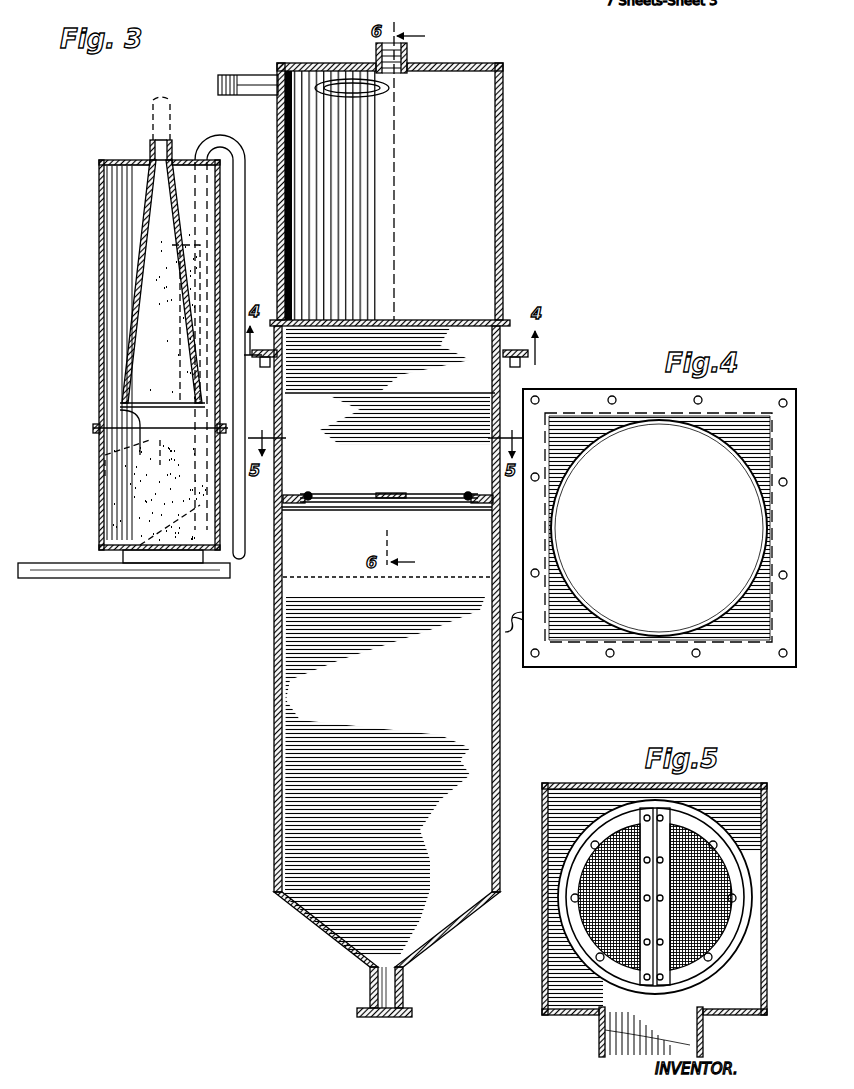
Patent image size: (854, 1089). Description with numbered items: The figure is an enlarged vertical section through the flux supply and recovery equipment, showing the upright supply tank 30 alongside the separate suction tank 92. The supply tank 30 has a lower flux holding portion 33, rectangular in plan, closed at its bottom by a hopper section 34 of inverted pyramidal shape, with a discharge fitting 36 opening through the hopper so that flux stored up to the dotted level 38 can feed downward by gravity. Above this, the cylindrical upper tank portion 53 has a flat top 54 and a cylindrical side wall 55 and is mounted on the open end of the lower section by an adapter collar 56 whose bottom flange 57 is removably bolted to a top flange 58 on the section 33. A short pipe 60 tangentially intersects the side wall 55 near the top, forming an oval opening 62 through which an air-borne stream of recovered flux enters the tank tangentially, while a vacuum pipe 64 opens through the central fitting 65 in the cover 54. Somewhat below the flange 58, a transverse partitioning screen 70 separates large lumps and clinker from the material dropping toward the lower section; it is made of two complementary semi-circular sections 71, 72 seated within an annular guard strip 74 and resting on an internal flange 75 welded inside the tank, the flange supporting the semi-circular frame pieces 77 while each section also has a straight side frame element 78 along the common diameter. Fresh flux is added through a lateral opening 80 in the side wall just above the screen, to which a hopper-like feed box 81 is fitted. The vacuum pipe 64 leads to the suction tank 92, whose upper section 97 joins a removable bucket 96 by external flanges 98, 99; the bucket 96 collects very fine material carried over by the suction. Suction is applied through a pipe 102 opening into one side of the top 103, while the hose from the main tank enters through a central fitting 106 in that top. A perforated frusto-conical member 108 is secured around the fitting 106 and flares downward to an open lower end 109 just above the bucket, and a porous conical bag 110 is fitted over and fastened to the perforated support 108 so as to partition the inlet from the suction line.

In FIG. 3, the supply tank 30 is at (401, 519).
In FIG. 3, the lower flux holding portion 33 is at (275, 740).
In FIG. 5, the lower flux holding portion 33 is at (568, 783).
In FIG. 3, the hopper section 34 is at (330, 931).
In FIG. 3, the discharge fitting 36 is at (370, 993).
In FIG. 3, the flux level 38 is at (300, 581).
In FIG. 3, the upper tank portion 53 is at (384, 171).
In FIG. 3, the flat top 54 is at (485, 66).
In FIG. 3, the cylindrical side wall 55 is at (500, 222).
In FIG. 4, the cylindrical side wall 55 is at (726, 440).
In FIG. 3, the adapter collar 56 is at (496, 333).
In FIG. 4, the adapter collar 56 is at (592, 425).
In FIG. 3, the bottom flange 57 is at (526, 355).
In FIG. 4, the bottom flange 57 is at (650, 668).
In FIG. 3, the top flange 58 is at (519, 366).
In FIG. 3, the pipe 60 is at (253, 78).
In FIG. 3, the oval opening 62 is at (381, 93).
In FIG. 3, the vacuum pipe 64 is at (152, 101).
In FIG. 3, the fitting 65 is at (408, 60).
In FIG. 3, the partitioning screen 70 is at (387, 493).
In FIG. 5, the partitioning screen 70 is at (631, 902).
In FIG. 3, the semi-circular screen section 71 is at (362, 507).
In FIG. 5, the semi-circular screen section 71 is at (620, 960).
In FIG. 3, the semi-circular screen section 72 is at (436, 507).
In FIG. 5, the semi-circular screen section 72 is at (690, 960).
In FIG. 3, the annular guard strip 74 is at (306, 493).
In FIG. 3, the internal flange 75 is at (306, 508).
In FIG. 3, the semi-circular frame piece 77 is at (468, 492).
In FIG. 5, the semi-circular frame piece 77 is at (705, 838).
In FIG. 3, the straight side frame element 78 is at (389, 493).
In FIG. 5, the straight side frame element 78 is at (628, 828).
In FIG. 5, the lateral opening 80 is at (644, 1040).
In FIG. 5, the feed box 81 is at (612, 1046).
In FIG. 3, the suction tank 92 is at (149, 333).
In FIG. 3, the bucket 96 is at (100, 518).
In FIG. 3, the upper section 97 is at (100, 236).
In FIG. 3, the external flange 98 is at (94, 429).
In FIG. 3, the external flange 99 is at (97, 423).
In FIG. 3, the suction pipe 102 is at (240, 212).
In FIG. 3, the top 103 is at (120, 160).
In FIG. 3, the central fitting 106 is at (173, 149).
In FIG. 3, the perforated frusto-conical member 108 is at (186, 247).
In FIG. 3, the open lower end 109 is at (100, 457).
In FIG. 3, the conical bag 110 is at (186, 205).